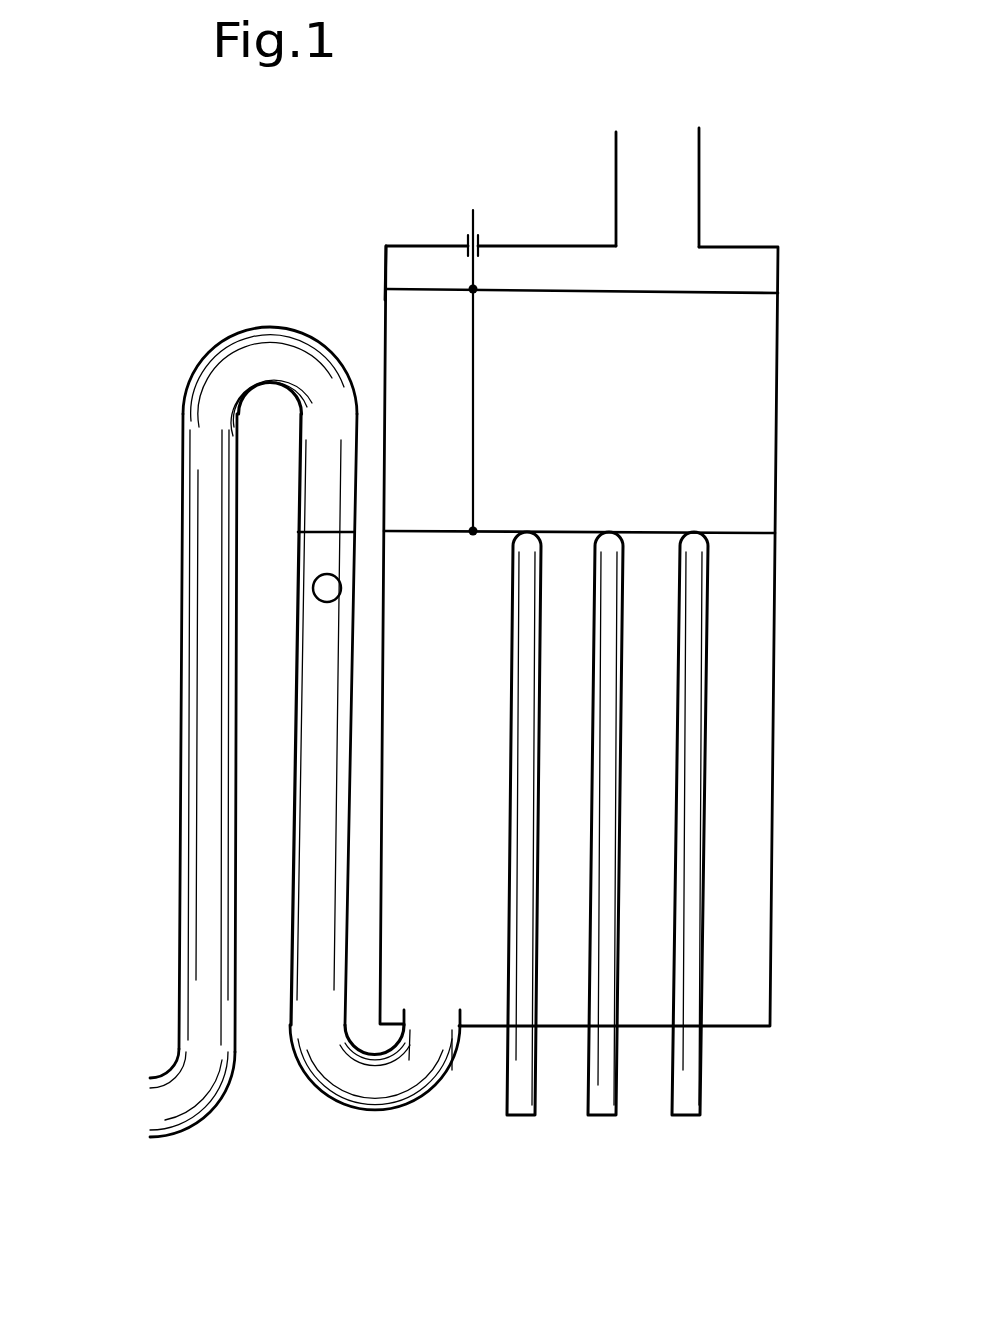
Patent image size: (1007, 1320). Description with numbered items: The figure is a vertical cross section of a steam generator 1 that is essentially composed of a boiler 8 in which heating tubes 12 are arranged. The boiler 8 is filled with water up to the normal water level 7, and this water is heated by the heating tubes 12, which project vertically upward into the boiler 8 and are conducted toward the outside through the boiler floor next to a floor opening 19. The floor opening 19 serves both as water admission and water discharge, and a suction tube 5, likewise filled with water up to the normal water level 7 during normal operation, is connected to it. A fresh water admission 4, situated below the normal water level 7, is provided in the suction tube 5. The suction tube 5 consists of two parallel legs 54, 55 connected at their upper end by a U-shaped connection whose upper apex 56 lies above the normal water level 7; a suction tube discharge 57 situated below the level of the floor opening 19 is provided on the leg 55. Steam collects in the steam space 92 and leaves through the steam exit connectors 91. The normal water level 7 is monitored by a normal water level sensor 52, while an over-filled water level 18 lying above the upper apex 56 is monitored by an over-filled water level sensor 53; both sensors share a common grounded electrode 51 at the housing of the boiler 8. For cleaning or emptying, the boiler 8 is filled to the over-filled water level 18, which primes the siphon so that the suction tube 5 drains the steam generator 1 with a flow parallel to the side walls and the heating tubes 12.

The steam generator 1 is at (752, 260).
The steam exit connectors 91 is at (655, 155).
The over-filled water level 18 is at (780, 292).
The common grounded electrode 51 is at (383, 272).
The steam space 92 is at (730, 410).
The over-filled water level sensor 53 is at (470, 287).
The normal water level sensor 52 is at (480, 527).
The normal water level 7 is at (850, 524).
The boiler 8 is at (730, 660).
The heating tubes 12 is at (693, 760).
The fresh water admission 4 is at (341, 589).
The upper apex 56 is at (260, 328).
The leg 55 is at (215, 812).
The suction tube discharge 57 is at (152, 1120).
The leg 54 is at (327, 690).
The suction tube 5 is at (370, 1085).
The floor opening 19 is at (432, 1030).